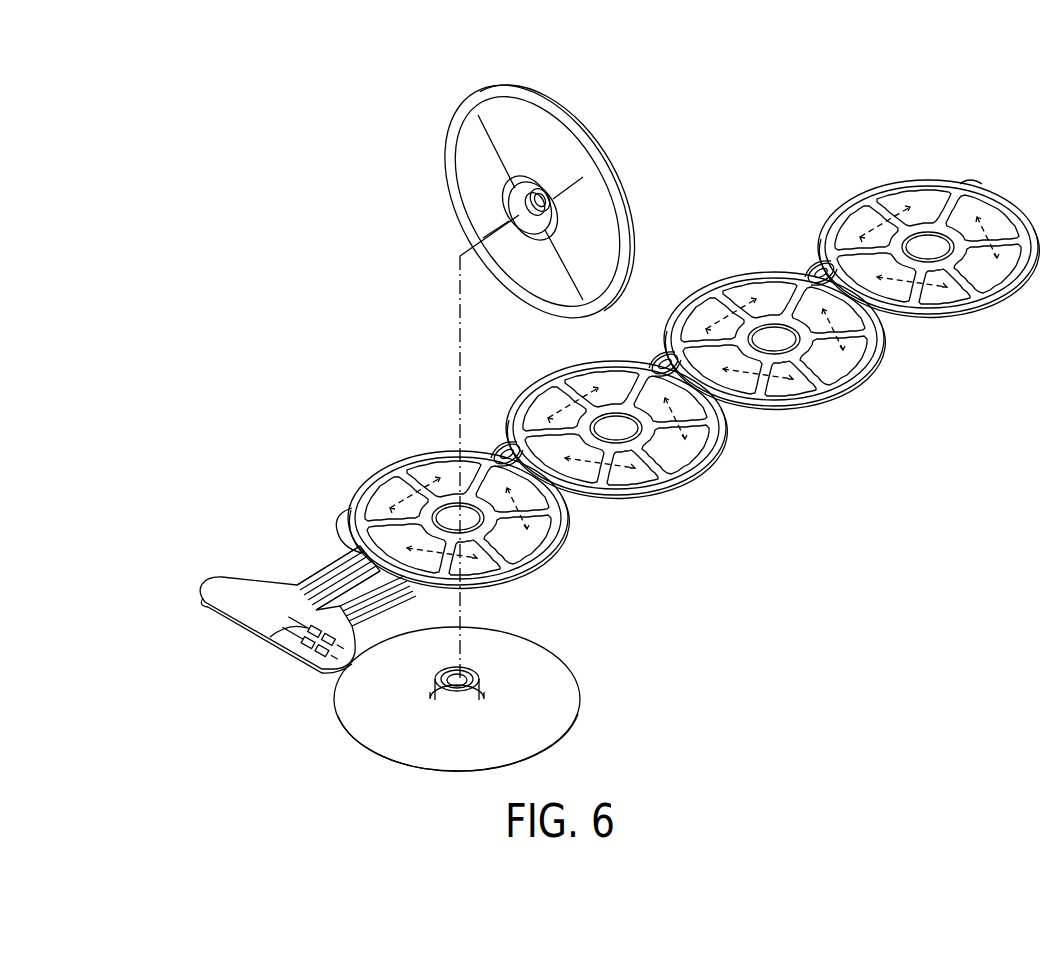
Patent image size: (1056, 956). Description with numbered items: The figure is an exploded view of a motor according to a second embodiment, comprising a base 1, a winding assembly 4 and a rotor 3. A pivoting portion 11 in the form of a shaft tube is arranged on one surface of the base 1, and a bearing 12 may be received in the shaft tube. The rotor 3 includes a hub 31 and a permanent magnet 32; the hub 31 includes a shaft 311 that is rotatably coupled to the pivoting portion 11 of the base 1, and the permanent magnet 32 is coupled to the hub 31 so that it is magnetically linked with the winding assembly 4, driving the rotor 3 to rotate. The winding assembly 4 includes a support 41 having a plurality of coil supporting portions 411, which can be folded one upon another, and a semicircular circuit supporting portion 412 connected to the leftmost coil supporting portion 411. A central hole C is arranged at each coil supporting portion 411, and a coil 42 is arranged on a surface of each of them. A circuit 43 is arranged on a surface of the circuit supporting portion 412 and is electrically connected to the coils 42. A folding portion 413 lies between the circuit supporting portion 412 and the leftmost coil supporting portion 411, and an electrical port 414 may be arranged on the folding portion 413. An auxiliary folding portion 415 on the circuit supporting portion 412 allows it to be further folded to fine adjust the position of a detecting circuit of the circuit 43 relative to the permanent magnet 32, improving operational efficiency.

The base 1 is at (483, 682).
The pivoting portion 11 is at (480, 690).
The bearing 12 is at (470, 672).
The rotor 3 is at (552, 201).
The hub 31 is at (566, 120).
The permanent magnet 32 is at (472, 158).
The shaft 311 is at (530, 207).
The winding assembly 4 is at (603, 430).
The support 41 is at (603, 430).
The coil supporting portion 411 is at (353, 507).
The circuit supporting portion 412 is at (265, 582).
The folding portion 413 is at (325, 556).
The electrical port 414 is at (382, 592).
The auxiliary folding portion 415 is at (285, 657).
The coil 42 is at (362, 500).
The circuit 43 is at (322, 668).
The central hole C is at (448, 512).